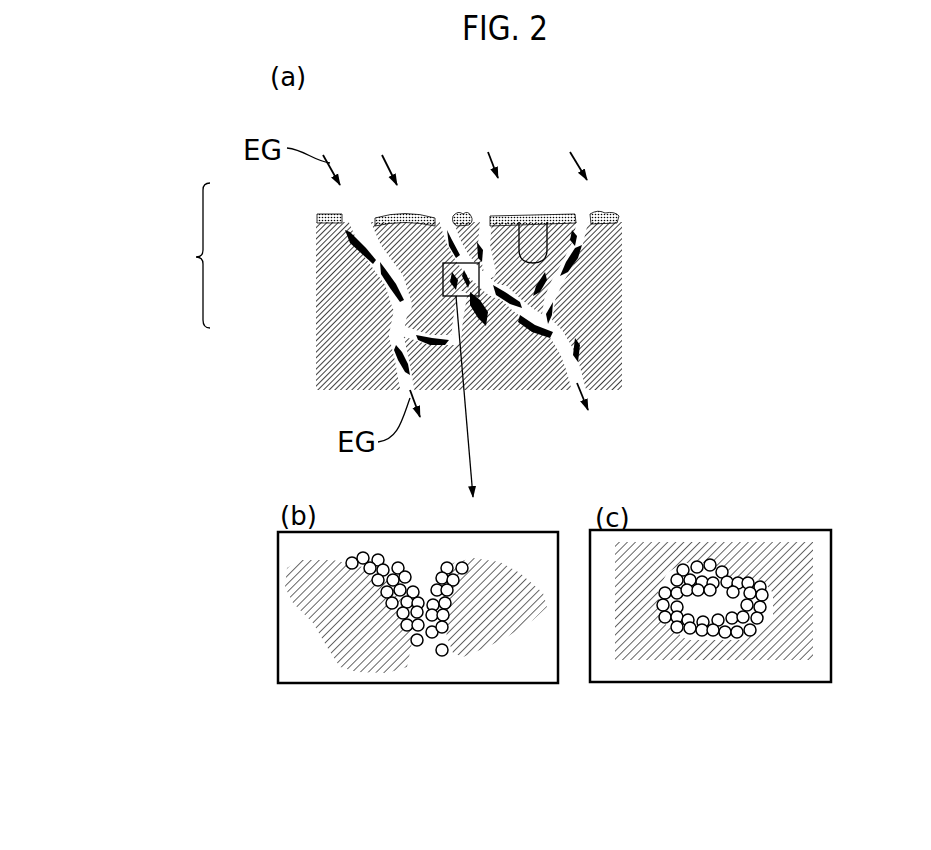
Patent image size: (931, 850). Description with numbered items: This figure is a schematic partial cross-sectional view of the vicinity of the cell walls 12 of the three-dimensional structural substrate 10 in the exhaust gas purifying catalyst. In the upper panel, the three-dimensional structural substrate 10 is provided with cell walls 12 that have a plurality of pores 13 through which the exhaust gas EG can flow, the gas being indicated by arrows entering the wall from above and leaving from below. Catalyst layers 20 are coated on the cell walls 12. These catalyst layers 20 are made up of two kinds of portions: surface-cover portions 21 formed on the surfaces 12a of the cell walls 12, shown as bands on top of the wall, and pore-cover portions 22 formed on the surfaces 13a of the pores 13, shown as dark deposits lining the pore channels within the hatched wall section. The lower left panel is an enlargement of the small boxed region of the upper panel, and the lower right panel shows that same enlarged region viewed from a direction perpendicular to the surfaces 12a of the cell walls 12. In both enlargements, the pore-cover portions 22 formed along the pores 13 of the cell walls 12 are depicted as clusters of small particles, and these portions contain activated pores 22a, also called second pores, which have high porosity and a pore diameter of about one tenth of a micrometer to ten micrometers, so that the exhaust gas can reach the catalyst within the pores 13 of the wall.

The three-dimensional structural substrate 10 is at (627, 253).
The cell walls 12 is at (605, 306).
The surfaces of the cell walls 12a is at (550, 232).
The pores 13 is at (443, 235).
The surfaces of the pores 13a is at (519, 222).
The catalyst layers 20 is at (196, 257).
The surface-cover portions 21 is at (323, 218).
The pore-cover portions 22 is at (396, 279).
The activated pores 22a is at (418, 627).